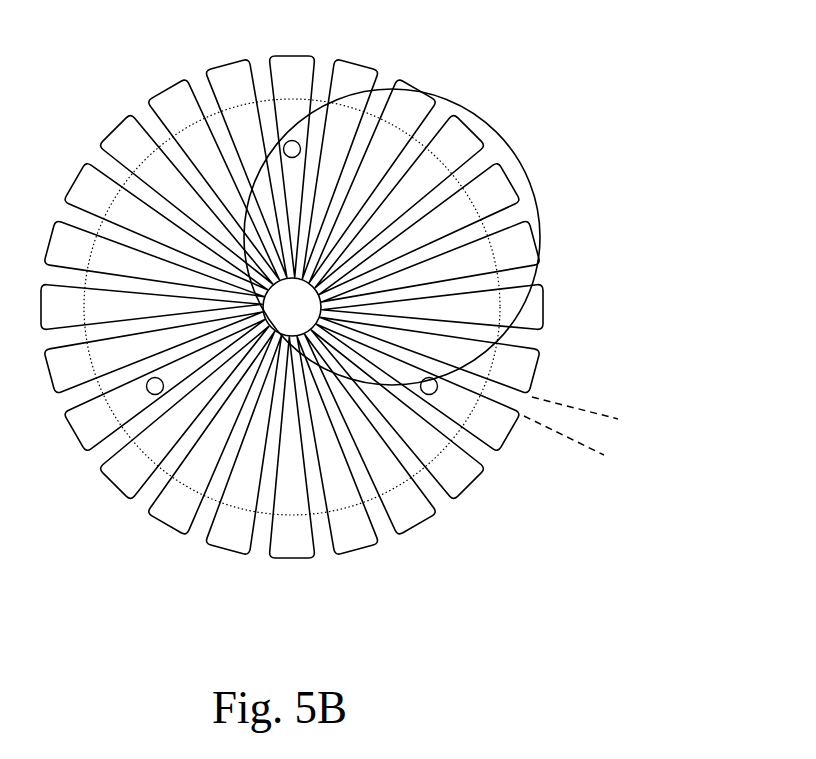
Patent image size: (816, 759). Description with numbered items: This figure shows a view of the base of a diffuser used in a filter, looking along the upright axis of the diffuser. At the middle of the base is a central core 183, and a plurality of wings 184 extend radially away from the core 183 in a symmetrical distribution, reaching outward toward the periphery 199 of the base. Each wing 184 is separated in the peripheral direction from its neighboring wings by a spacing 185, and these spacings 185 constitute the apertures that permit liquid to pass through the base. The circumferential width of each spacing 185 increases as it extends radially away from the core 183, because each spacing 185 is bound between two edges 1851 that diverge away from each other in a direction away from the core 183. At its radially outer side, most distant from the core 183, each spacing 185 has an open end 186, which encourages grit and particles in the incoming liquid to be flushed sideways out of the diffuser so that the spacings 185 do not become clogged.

The periphery 199 is at (582, 303).
The spacing 185 is at (139, 92).
The wing 184 is at (246, 94).
The central core 183 is at (307, 313).
The open end 186 is at (443, 510).
The edges 1851 is at (575, 408).